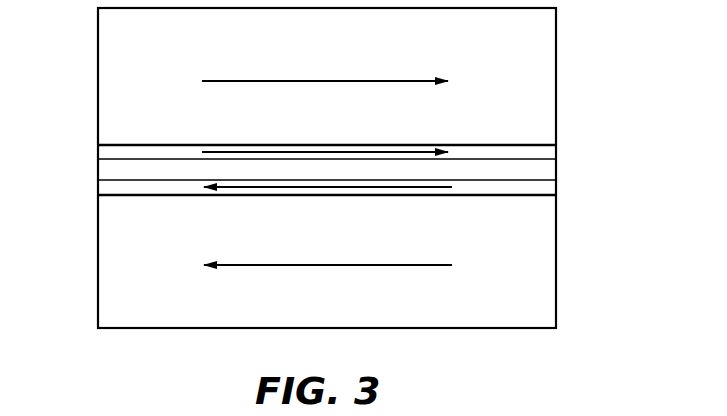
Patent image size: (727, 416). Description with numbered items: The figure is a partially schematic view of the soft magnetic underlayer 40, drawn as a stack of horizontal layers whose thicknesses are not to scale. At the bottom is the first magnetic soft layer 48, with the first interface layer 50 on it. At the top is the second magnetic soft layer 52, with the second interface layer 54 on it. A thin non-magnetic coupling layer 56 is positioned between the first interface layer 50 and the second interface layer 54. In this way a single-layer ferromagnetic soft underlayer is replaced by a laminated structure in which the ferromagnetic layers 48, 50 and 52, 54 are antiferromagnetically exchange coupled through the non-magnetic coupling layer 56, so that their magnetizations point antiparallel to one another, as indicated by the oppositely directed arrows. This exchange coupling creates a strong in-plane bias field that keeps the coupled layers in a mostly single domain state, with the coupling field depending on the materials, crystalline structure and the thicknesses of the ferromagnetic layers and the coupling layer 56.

The soft magnetic underlayer 40 is at (565, 8).
The first magnetic soft layer 48 is at (108, 262).
The first interface layer 50 is at (106, 186).
The second magnetic soft layer 52 is at (140, 89).
The second interface layer 54 is at (110, 152).
The non-magnetic coupling layer 56 is at (110, 170).